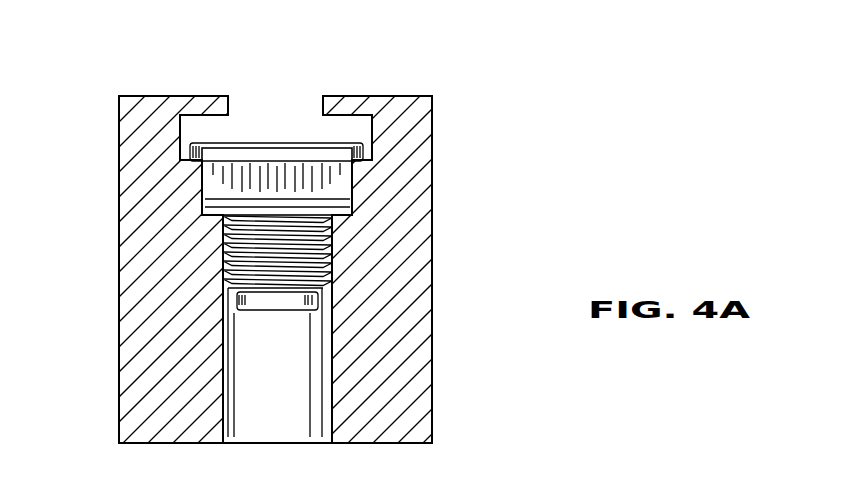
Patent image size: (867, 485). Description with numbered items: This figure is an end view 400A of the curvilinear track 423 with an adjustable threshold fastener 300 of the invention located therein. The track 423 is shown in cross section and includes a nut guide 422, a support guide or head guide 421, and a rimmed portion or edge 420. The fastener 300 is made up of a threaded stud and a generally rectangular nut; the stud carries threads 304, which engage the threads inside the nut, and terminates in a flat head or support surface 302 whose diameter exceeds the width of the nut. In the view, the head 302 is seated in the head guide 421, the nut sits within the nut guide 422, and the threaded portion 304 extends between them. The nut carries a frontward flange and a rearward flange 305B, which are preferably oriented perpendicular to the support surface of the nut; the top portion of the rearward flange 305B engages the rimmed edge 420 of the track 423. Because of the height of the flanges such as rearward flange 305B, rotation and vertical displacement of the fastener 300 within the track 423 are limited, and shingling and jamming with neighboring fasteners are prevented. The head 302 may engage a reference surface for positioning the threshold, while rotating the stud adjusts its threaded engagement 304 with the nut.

The adjustable threshold fastener 300 is at (158, 43).
The head or support surface 302 is at (295, 143).
The threads 304 is at (332, 256).
The rearward flange 305B is at (330, 183).
The end view 400A is at (560, 139).
The rimmed portion or edge 420 is at (229, 106).
The support guide (head guide) 421 is at (372, 130).
The nut guide 422 is at (202, 188).
The curvilinear track 423 is at (422, 383).